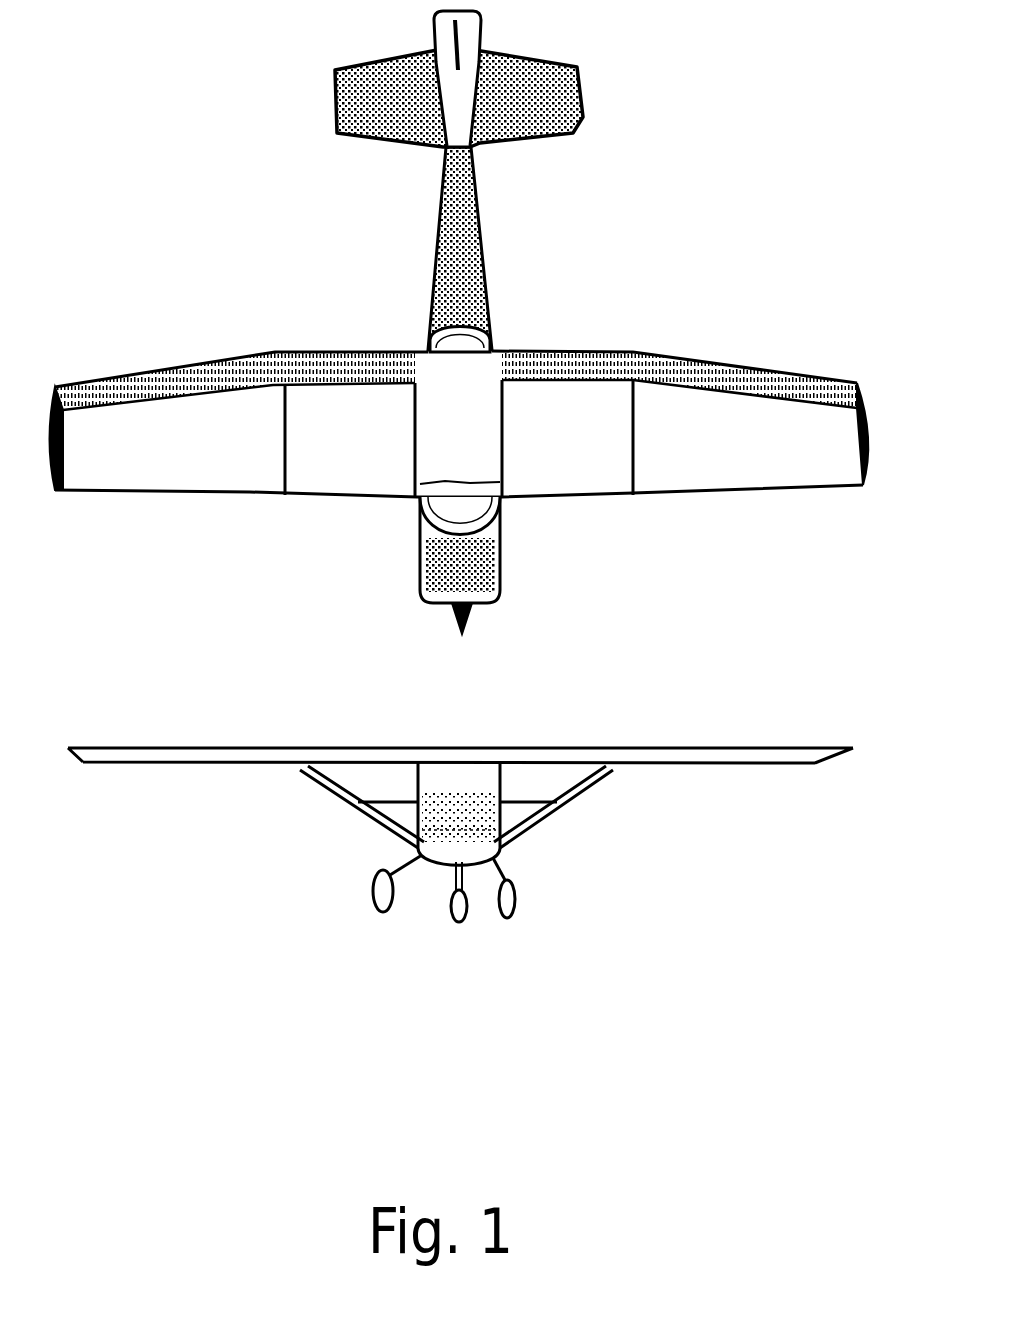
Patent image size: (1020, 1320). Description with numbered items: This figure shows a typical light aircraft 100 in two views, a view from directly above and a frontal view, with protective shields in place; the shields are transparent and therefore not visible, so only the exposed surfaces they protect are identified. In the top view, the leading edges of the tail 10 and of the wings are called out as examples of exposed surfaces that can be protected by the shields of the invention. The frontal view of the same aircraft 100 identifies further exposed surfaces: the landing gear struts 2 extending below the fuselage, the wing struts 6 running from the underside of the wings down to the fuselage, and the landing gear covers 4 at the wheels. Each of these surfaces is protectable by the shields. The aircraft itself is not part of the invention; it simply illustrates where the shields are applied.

The light aircraft 100 is at (459, 322).
The tail 10 is at (497, 122).
The wing struts 6 is at (608, 782).
The landing gear covers 4 is at (373, 875).
The landing gear struts 2 is at (400, 872).